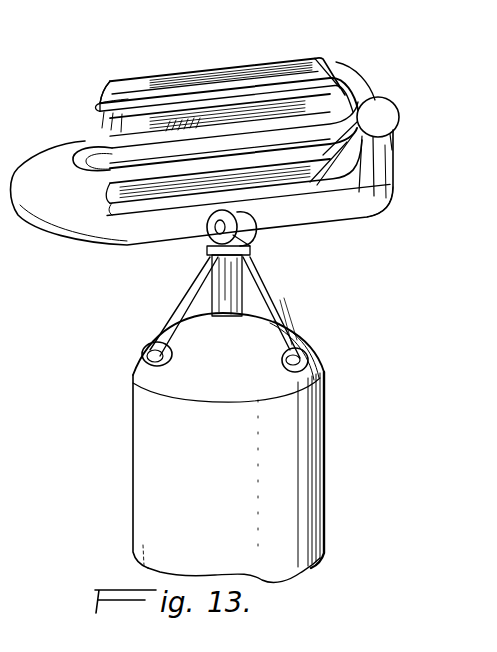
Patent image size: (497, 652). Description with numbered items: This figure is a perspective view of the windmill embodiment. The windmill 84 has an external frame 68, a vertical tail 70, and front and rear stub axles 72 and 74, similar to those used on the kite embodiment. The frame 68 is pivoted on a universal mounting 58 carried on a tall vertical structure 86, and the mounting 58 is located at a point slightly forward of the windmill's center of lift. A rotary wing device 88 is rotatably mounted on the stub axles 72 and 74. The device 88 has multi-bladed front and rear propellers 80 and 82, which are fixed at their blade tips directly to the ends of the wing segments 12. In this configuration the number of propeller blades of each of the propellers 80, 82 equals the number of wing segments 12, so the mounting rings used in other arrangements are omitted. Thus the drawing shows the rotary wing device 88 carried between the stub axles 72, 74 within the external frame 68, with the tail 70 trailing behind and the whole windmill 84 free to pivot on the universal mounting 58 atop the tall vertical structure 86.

The wing segments 12 is at (213, 142).
The universal mounting 58 is at (230, 233).
The external frame 68 is at (350, 205).
The vertical tail 70 is at (27, 180).
The front stub axle 72 is at (383, 113).
The rear stub axle 74 is at (90, 135).
The front propeller 80 is at (337, 100).
The rear propeller 82 is at (102, 132).
The windmill 84 is at (94, 389).
The tall vertical structure 86 is at (285, 408).
The rotary wing device 88 is at (278, 50).